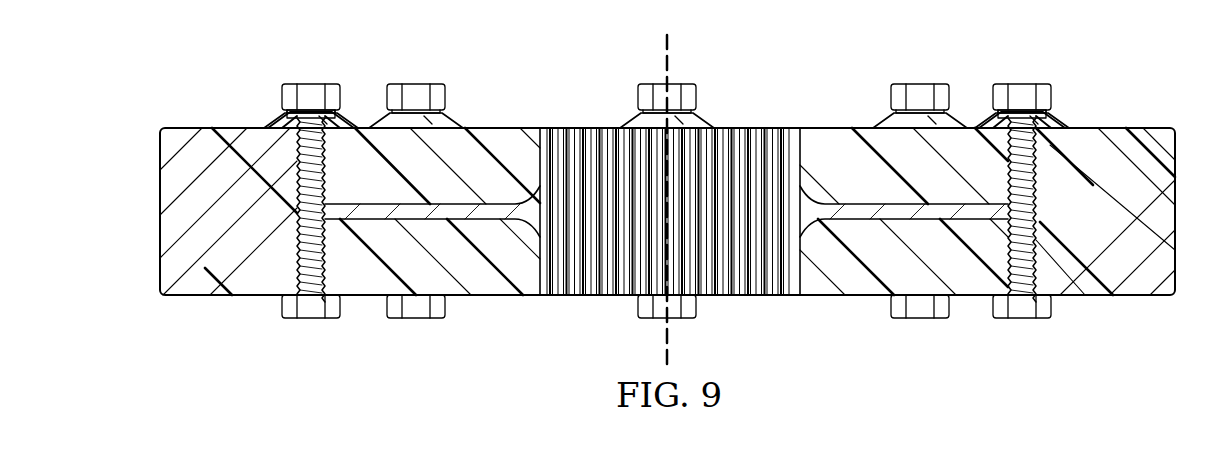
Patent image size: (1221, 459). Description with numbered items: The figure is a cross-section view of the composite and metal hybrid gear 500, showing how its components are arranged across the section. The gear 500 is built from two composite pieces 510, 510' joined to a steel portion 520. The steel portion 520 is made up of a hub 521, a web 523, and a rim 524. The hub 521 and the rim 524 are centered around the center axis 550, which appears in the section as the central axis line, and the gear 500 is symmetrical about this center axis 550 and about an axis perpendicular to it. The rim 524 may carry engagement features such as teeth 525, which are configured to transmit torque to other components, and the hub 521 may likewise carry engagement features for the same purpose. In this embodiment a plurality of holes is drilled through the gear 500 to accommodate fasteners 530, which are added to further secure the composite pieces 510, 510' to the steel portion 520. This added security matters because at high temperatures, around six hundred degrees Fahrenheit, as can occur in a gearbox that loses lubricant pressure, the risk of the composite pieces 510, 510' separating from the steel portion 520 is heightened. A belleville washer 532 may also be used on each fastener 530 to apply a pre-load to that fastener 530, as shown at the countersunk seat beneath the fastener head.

The gear 500 is at (858, 60).
The composite piece 510 is at (447, 189).
The composite piece 510' is at (440, 283).
The steel portion 520 is at (1139, 296).
The hub 521 is at (798, 296).
The web 523 is at (460, 202).
The rim 524 is at (1162, 128).
The teeth 525 is at (160, 236).
The fastener 530 is at (311, 84).
The belleville washer 532 is at (272, 121).
The center axis 550 is at (664, 50).